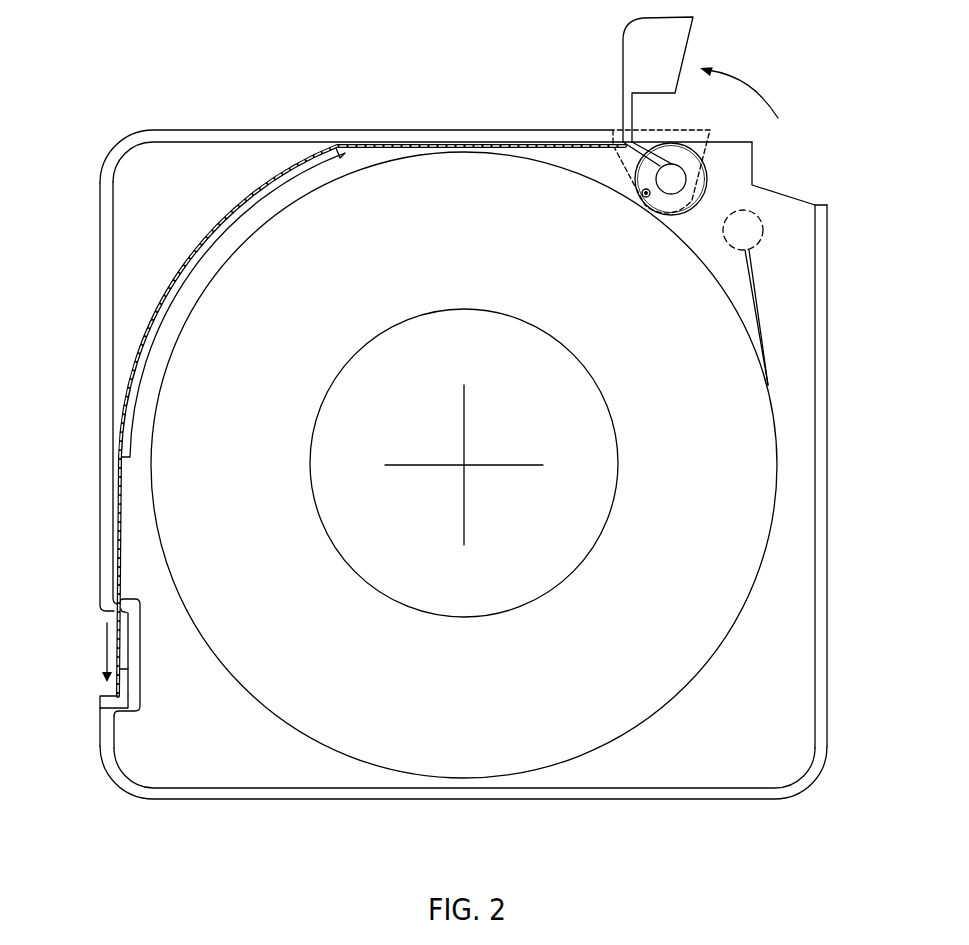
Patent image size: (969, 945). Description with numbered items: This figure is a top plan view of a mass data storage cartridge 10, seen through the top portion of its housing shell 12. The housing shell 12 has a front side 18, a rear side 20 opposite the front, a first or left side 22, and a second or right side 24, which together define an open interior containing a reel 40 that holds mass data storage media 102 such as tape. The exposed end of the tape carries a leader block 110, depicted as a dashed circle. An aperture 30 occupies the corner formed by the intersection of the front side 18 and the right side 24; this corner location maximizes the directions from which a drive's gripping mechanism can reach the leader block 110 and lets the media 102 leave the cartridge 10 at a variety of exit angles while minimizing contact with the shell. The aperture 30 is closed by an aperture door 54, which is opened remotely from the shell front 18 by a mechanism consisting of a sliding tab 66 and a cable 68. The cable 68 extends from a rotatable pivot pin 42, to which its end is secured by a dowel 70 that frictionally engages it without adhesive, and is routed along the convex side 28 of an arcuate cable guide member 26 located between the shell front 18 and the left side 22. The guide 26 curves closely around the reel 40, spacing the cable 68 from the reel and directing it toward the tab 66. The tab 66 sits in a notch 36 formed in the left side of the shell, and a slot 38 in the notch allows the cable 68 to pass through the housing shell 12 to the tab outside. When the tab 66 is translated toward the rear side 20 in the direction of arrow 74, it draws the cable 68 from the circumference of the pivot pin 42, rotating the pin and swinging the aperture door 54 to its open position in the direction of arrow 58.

The cartridge 10 is at (85, 117).
The housing shell 12 is at (763, 715).
The front side 18 is at (314, 130).
The rear side 20 is at (223, 800).
The first side 22 is at (98, 262).
The second side 24 is at (827, 290).
The cable guide member 26 is at (343, 150).
The convex side 28 is at (253, 192).
The aperture 30 is at (813, 186).
The notch 36 is at (142, 652).
The slot 38 is at (117, 613).
The reel 40 is at (700, 496).
The pivot pin 42 is at (640, 188).
The aperture door 54 is at (623, 75).
The arrow 58 is at (720, 68).
The sliding tab 66 is at (100, 698).
The cable 68 is at (452, 146).
The dowel 70 is at (644, 196).
The arrow 74 is at (104, 645).
The mass data storage media 102 is at (763, 343).
The leader block 110 is at (742, 230).